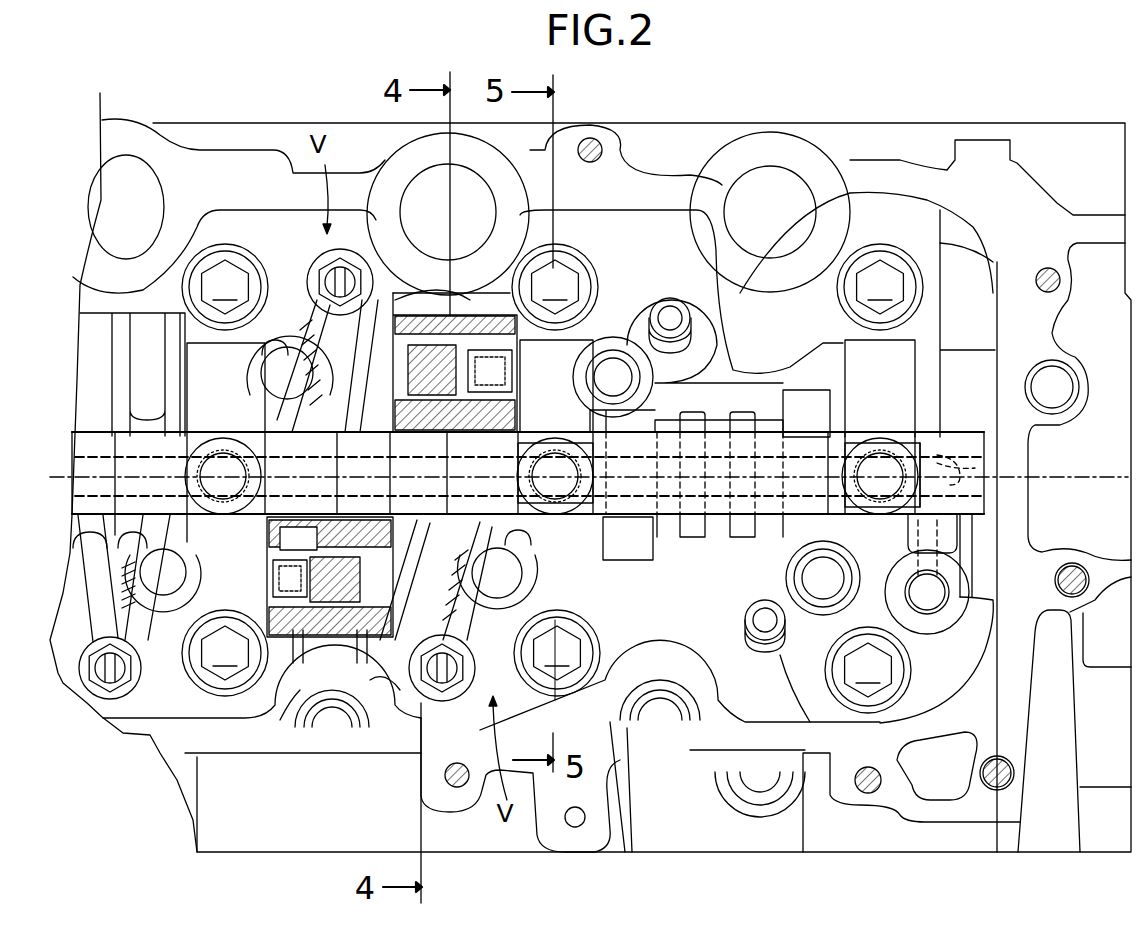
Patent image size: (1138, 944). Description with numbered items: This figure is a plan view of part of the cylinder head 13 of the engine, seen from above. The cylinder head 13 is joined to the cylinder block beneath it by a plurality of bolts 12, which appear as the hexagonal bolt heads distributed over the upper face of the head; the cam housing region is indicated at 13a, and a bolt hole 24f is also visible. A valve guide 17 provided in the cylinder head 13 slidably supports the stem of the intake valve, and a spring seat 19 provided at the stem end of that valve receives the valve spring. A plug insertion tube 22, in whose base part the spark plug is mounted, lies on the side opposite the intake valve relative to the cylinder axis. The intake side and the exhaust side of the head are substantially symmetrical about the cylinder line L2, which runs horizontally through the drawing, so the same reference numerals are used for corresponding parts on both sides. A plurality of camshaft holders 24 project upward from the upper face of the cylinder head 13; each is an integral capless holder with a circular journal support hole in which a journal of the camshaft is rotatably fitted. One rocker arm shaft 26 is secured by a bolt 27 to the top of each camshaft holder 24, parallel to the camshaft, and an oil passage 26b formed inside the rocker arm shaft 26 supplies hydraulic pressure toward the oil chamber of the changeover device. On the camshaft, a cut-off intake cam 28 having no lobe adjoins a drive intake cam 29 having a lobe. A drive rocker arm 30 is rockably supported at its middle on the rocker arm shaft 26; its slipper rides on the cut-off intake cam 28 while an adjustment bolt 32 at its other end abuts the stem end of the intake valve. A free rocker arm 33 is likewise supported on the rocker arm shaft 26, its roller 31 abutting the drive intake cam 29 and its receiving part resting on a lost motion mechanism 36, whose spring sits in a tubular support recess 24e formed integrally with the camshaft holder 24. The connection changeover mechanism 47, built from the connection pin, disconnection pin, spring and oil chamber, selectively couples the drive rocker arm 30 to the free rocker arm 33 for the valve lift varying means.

The bolt 12 is at (552, 478).
The cylinder head 13 is at (836, 116).
The cam housing 13a is at (655, 243).
The valve guide 17 is at (700, 333).
The spring seat 19 is at (405, 290).
The plug insertion tube 22 is at (477, 205).
The camshaft holder 24 is at (203, 378).
The support recess 24e is at (625, 388).
The bolt hole 24f is at (586, 170).
The rocker arm shaft 26 is at (923, 427).
The oil passage 26b is at (940, 462).
The bolt 27 is at (232, 490).
The cut-off intake cam 28 is at (745, 412).
The drive intake cam 29 is at (792, 425).
The drive rocker arm 30 is at (343, 382).
The roller 31 is at (283, 735).
The adjustment bolt 32 is at (345, 268).
The free rocker arm 33 is at (275, 388).
The lost motion mechanism 36 is at (257, 373).
The connection changeover mechanism 47 is at (528, 385).
The cylinder line L2 is at (1045, 475).